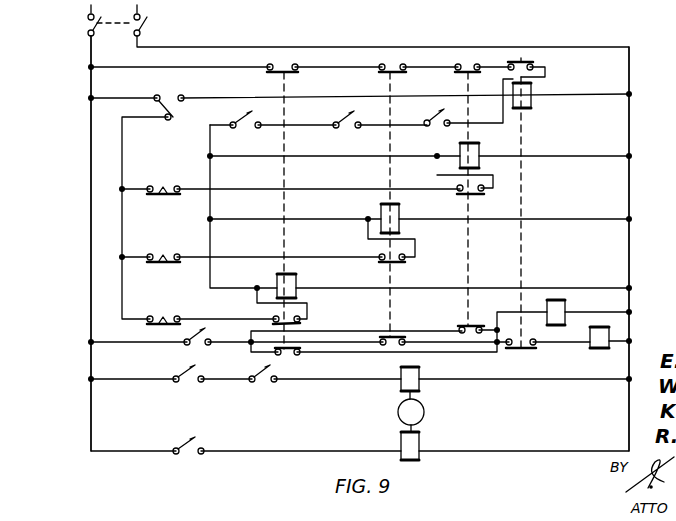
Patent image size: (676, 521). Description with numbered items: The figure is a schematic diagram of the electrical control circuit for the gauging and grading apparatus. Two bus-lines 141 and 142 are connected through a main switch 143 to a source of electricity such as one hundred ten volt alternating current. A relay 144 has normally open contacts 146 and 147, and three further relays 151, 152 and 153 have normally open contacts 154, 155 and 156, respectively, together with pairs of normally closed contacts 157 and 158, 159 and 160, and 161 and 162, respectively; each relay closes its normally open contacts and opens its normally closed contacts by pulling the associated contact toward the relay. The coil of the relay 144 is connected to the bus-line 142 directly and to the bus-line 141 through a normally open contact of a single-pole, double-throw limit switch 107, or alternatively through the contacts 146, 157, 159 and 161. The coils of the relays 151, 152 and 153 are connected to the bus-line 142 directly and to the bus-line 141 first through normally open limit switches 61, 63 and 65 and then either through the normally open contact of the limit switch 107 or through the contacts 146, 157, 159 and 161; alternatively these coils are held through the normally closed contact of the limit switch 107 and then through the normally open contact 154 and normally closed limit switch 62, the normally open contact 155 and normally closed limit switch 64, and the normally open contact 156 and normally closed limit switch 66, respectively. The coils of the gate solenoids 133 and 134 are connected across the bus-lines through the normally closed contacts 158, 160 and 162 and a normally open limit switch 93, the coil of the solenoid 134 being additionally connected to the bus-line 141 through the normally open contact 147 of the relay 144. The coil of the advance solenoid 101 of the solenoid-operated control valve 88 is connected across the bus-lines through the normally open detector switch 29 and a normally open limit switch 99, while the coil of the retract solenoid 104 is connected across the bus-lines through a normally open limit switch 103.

The main switch 143 is at (146, 21).
The bus-line 142 is at (629, 115).
The bus-line 141 is at (91, 413).
The limit switch 107 is at (170, 111).
The normally closed contact 161 is at (284, 74).
The normally closed contact 159 is at (390, 74).
The normally closed contact 157 is at (468, 74).
The normally open contact 146 is at (521, 58).
The relay 144 is at (531, 100).
The normally open limit switch 61 is at (247, 121).
The normally open limit switch 63 is at (349, 121).
The normally open limit switch 65 is at (440, 119).
The relay 151 is at (479, 148).
The relay 152 is at (399, 212).
The relay 153 is at (296, 283).
The normally closed limit switch 62 is at (160, 195).
The normally closed limit switch 64 is at (160, 263).
The normally closed limit switch 66 is at (162, 325).
The normally open contact 154 is at (470, 196).
The normally open contact 155 is at (392, 263).
The normally open contact 156 is at (300, 323).
The normally closed contact 160 is at (392, 336).
The normally closed contact 158 is at (470, 325).
The normally closed contact 162 is at (292, 350).
The normally open contact 147 is at (519, 350).
The solenoid 133 is at (565, 304).
The solenoid 134 is at (593, 349).
The normally open limit switch 93 is at (201, 334).
The detector switch 29 is at (192, 370).
The normally open limit switch 99 is at (265, 370).
The normally open limit switch 103 is at (190, 443).
The advance solenoid 101 is at (419, 372).
The solenoid-operated control valve 88 is at (424, 411).
The retract solenoid 104 is at (419, 437).